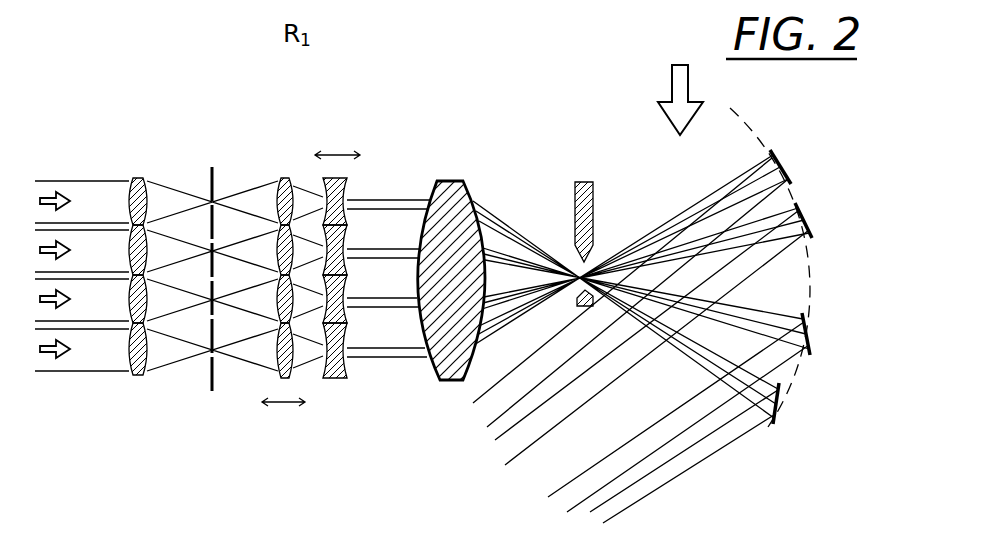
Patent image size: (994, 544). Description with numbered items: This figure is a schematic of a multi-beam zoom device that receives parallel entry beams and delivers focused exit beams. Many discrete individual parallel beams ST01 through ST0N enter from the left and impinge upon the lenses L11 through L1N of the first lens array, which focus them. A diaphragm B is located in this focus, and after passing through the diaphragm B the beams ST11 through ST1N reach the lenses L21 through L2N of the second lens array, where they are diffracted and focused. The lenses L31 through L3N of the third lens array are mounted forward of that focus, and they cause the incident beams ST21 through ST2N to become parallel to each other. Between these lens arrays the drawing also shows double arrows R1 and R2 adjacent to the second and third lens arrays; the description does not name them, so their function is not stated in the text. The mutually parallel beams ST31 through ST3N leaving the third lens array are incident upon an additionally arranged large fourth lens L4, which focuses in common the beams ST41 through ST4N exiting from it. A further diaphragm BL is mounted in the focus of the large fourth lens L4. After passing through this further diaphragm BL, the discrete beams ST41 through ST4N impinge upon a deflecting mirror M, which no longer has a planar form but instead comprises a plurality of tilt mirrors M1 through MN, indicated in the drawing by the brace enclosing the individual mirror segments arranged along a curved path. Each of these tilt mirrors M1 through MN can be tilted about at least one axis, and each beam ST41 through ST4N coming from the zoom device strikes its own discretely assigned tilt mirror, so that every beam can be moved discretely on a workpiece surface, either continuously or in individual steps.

The parallel entry beam ST01 is at (86, 198).
The parallel entry beam ST0N is at (73, 365).
The lens of the first lens array L11 is at (135, 177).
The lens of the first lens array L1N is at (138, 378).
The beam after the diaphragm ST11 is at (173, 202).
The beam after the diaphragm ST1N is at (173, 350).
The diaphragm B is at (213, 180).
The lens of the second lens array L21 is at (284, 177).
The lens of the second lens array L2N is at (277, 375).
The beam incident on the third lens array ST21 is at (300, 200).
The beam incident on the third lens array ST2N is at (307, 360).
The adjustment displacement of second lens array R1 is at (288, 404).
The adjustment displacement of third lens array R2 is at (345, 153).
The lens of the third lens array L31 is at (350, 184).
The lens of the third lens array L3N is at (347, 373).
The mutually parallel beam ST31 is at (393, 207).
The mutually parallel beam ST3N is at (400, 357).
The fourth lens L4 is at (448, 183).
The exit beam ST41 is at (508, 230).
The exit beam ST4N is at (487, 340).
The further diaphragm BL is at (582, 182).
The deflecting mirror M is at (813, 285).
The tilt mirror MN is at (780, 167).
The tilt mirror M1 is at (778, 407).